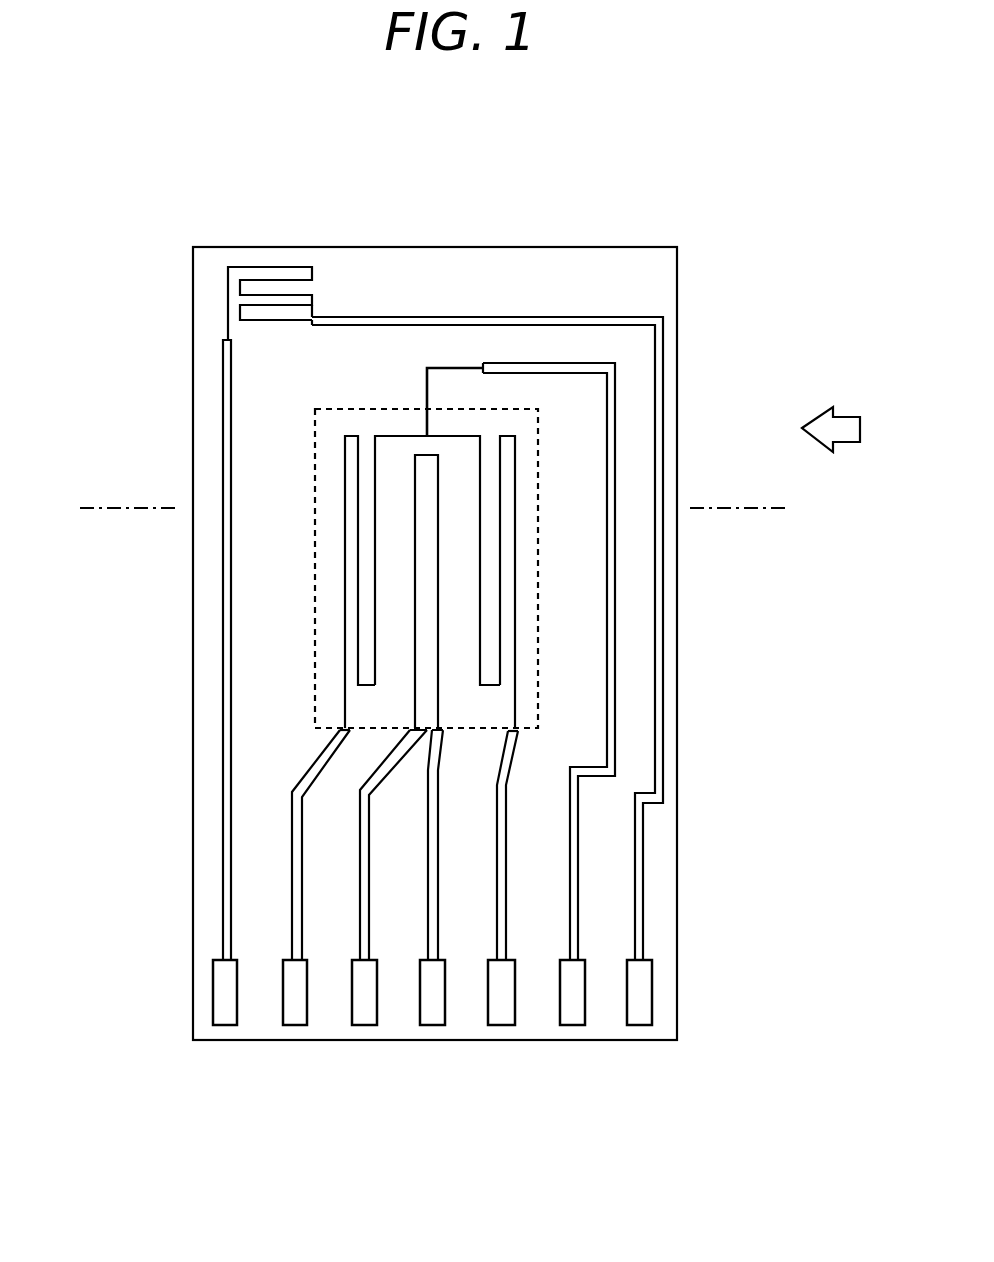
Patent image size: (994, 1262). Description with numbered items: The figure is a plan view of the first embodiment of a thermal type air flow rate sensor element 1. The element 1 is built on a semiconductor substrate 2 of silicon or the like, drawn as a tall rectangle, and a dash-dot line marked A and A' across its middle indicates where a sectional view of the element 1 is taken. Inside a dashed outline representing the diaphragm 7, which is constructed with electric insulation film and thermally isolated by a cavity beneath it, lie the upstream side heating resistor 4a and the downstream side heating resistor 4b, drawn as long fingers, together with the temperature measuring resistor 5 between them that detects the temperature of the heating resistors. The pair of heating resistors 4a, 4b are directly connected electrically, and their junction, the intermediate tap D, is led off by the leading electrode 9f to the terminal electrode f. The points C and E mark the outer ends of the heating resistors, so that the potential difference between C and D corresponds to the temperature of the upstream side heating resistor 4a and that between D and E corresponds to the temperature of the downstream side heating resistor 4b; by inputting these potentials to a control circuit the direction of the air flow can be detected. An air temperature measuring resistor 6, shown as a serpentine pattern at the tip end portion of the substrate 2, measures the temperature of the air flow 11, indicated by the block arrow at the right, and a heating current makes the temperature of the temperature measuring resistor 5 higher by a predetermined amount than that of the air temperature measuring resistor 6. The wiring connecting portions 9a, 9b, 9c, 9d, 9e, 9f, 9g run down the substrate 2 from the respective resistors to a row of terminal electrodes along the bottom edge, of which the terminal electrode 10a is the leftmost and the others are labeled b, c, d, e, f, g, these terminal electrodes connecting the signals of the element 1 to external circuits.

The thermal type air flow rate sensor element 1 is at (605, 235).
The semiconductor substrate 2 is at (470, 270).
The upstream side heating resistor 4a is at (517, 520).
The downstream side heating resistor 4b is at (344, 542).
The temperature measuring resistor 5 is at (415, 478).
The air temperature measuring resistor 6 is at (240, 267).
The diaphragm 7 is at (335, 643).
The wiring connecting portion 9a is at (222, 864).
The wiring connecting portion 9b is at (292, 797).
The wiring connecting portion 9c is at (368, 902).
The wiring connecting portion 9d is at (440, 862).
The wiring connecting portion 9e is at (506, 820).
The leading electrode 9f is at (615, 700).
The wiring connecting portion 9g is at (632, 317).
The terminal electrode 10a is at (213, 1003).
The air flow 11 is at (845, 423).
The section line A–A' end point A is at (115, 514).
The section line A–A' end point A' is at (760, 517).
The point C is at (513, 733).
The junction (intermediate tap) D is at (425, 383).
The point E is at (344, 722).
The terminal electrode b is at (298, 1017).
The terminal electrode c is at (368, 1017).
The terminal electrode d is at (436, 1017).
The terminal electrode e is at (505, 1017).
The terminal electrode f is at (577, 1017).
The terminal electrode g is at (646, 1017).